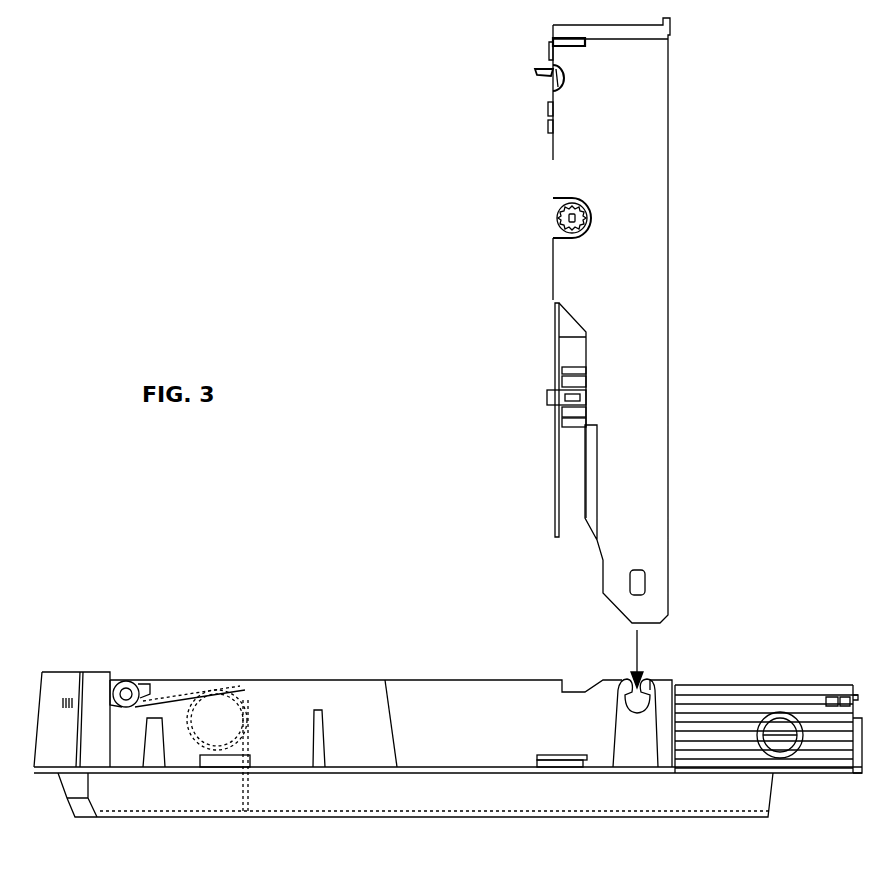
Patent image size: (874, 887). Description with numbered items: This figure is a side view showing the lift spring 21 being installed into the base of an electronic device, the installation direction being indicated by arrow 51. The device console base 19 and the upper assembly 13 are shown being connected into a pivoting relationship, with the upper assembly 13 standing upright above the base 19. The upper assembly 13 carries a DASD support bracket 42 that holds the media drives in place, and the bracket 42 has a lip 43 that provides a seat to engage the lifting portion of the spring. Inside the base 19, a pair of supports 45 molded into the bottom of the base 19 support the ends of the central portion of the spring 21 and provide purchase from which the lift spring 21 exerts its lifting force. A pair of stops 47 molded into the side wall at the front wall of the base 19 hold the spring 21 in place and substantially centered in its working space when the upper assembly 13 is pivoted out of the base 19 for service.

The upper assembly 13 is at (668, 318).
The DASD support bracket 42 is at (555, 470).
The lip 43 is at (538, 72).
The device console base 19 is at (313, 680).
The lift spring 21 is at (167, 700).
The stops 47 is at (148, 688).
The supports 45 is at (250, 782).
The arrow 51 is at (643, 638).